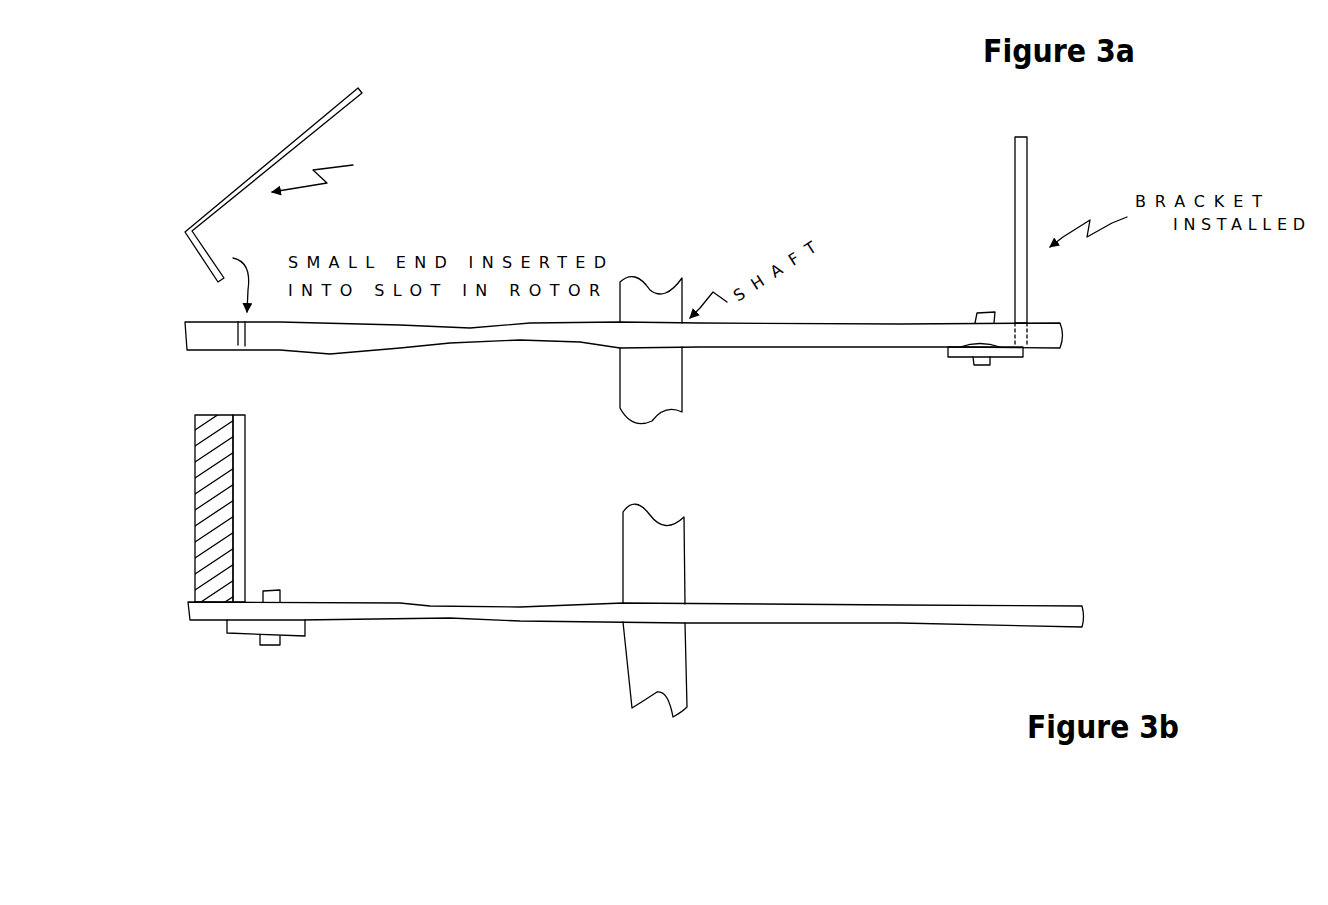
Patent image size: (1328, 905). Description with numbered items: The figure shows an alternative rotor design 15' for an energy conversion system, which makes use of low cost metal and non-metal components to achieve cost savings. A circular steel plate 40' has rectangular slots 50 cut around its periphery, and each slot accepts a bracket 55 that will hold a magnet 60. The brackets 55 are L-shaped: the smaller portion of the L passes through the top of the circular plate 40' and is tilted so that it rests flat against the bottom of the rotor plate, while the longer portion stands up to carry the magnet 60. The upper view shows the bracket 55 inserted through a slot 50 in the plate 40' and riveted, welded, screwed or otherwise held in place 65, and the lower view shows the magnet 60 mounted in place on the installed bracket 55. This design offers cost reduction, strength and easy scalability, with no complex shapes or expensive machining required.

In FIG. 3A, the alternative rotor design 15' is at (551, 96).
In FIG. 3A, the bracket 55 is at (292, 125).
In FIG. 3A, the rectangular slot 50 is at (247, 352).
In FIG. 3A, the circular steel plate 40' is at (624, 391).
In FIG. 3A, the held in place 65 is at (987, 374).
In FIG. 3B, the magnet 60 is at (130, 697).